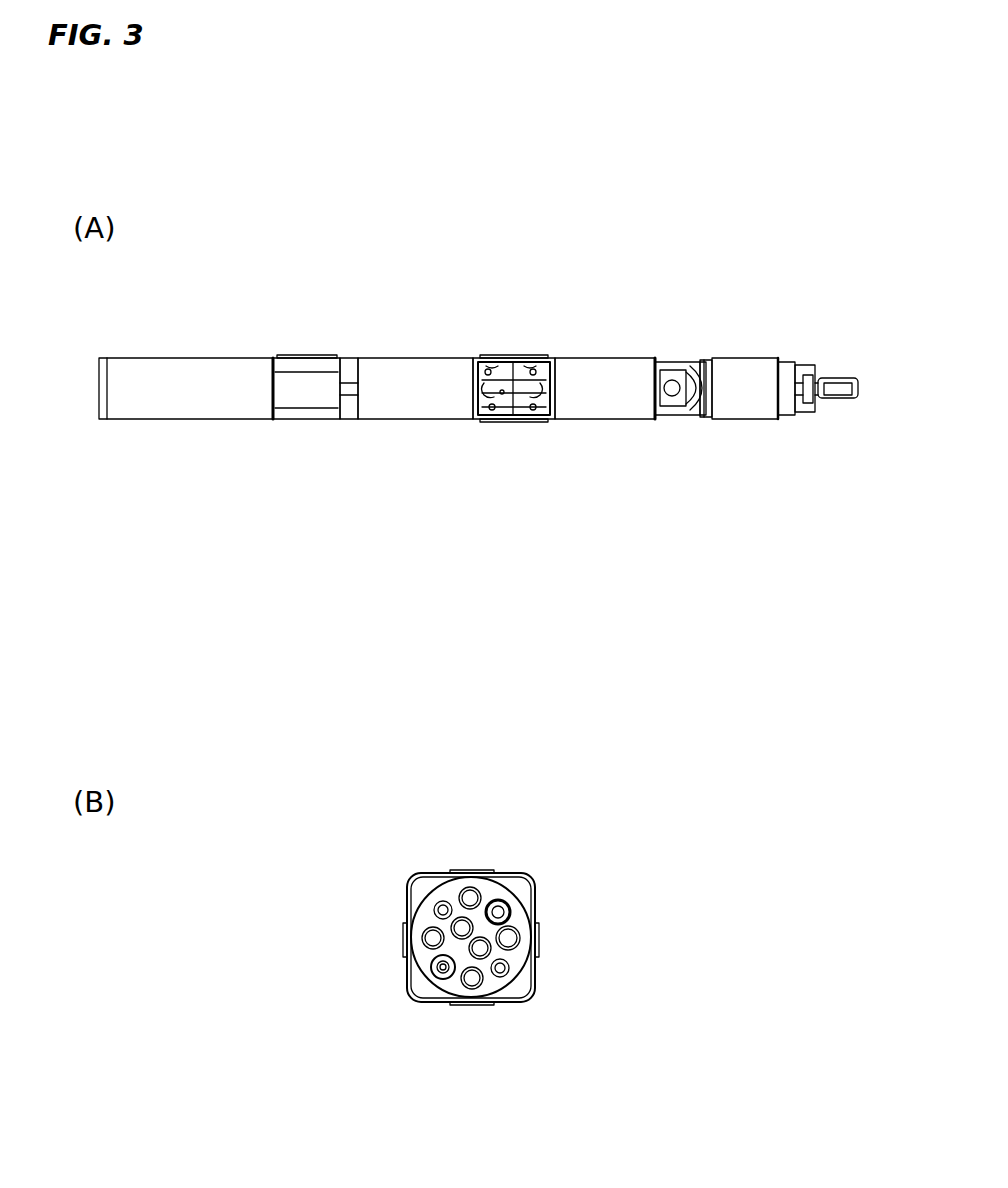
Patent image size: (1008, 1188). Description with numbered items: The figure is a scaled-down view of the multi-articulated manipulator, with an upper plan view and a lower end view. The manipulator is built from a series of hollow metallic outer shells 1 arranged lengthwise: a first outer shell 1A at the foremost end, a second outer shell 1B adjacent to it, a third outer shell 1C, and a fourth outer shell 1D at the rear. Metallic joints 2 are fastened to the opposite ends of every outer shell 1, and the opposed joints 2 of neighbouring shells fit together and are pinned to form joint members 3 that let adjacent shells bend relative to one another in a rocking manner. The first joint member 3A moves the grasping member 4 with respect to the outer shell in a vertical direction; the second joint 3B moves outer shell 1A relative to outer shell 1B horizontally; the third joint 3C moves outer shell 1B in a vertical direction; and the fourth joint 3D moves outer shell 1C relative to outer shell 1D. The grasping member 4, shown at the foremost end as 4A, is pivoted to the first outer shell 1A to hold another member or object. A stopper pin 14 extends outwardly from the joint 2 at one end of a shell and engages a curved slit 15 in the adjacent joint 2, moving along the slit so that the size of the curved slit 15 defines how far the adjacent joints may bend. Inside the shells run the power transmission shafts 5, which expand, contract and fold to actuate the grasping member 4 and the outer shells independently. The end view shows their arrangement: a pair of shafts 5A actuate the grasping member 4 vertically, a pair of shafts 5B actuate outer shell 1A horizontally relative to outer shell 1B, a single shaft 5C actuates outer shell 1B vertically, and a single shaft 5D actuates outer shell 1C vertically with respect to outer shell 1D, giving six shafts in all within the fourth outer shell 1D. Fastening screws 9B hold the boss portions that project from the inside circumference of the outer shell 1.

The hollow outer shell 1 is at (470, 704).
The first outer shell 1A is at (755, 420).
The second outer shell 1B is at (608, 412).
The third outer shell 1C is at (422, 412).
The fourth outer shell 1D is at (172, 410).
The joint 2 is at (345, 416).
The joint member 3 is at (560, 614).
The first joint member 3A is at (800, 360).
The second joint 3B is at (680, 358).
The third joint 3C is at (530, 356).
The fourth joint 3D is at (338, 356).
The grasping member 4 is at (861, 354).
The connector 4A is at (847, 378).
The power transmission shaft 5 is at (502, 392).
The power transmission shaft 5A is at (468, 922).
The power transmission shaft 5B is at (437, 937).
The power transmission shaft 5C is at (463, 985).
The power transmission shaft 5D is at (466, 893).
The fastening screw 9B is at (507, 910).
The stopper pin 14 is at (312, 356).
The curved slit 15 is at (703, 358).